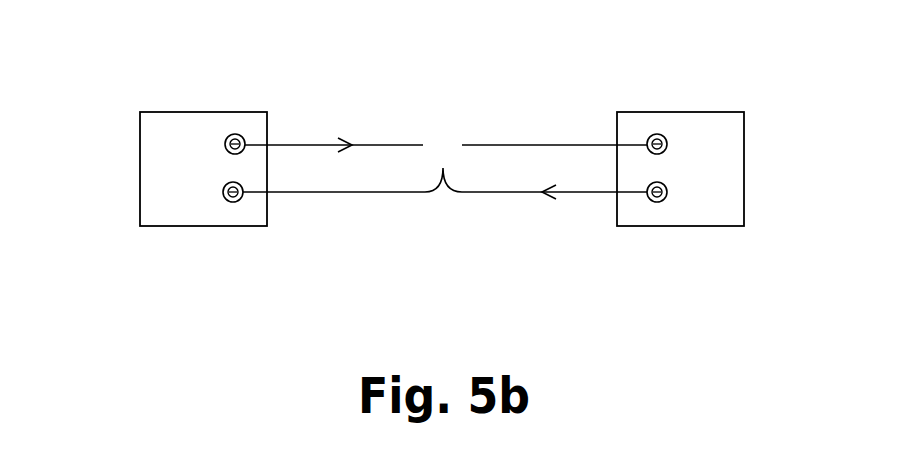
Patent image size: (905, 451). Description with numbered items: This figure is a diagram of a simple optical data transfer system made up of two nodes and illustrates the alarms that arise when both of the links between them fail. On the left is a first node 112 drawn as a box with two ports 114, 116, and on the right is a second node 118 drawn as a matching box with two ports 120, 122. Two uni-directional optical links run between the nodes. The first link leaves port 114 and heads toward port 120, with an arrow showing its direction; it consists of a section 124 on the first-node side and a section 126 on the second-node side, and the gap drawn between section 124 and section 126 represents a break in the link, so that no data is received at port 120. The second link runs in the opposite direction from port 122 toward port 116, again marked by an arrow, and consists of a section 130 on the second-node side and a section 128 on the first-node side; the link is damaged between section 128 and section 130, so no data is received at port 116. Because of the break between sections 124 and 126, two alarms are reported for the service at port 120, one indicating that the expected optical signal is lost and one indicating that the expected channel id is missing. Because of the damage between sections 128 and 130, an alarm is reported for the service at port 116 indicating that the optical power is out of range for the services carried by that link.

The first node 112 is at (140, 168).
The port 114 is at (228, 137).
The port 116 is at (226, 200).
The second node 118 is at (744, 166).
The port 120 is at (664, 137).
The port 122 is at (664, 200).
The section 124 is at (316, 145).
The section 126 is at (537, 145).
The section 128 is at (332, 192).
The section 130 is at (571, 192).